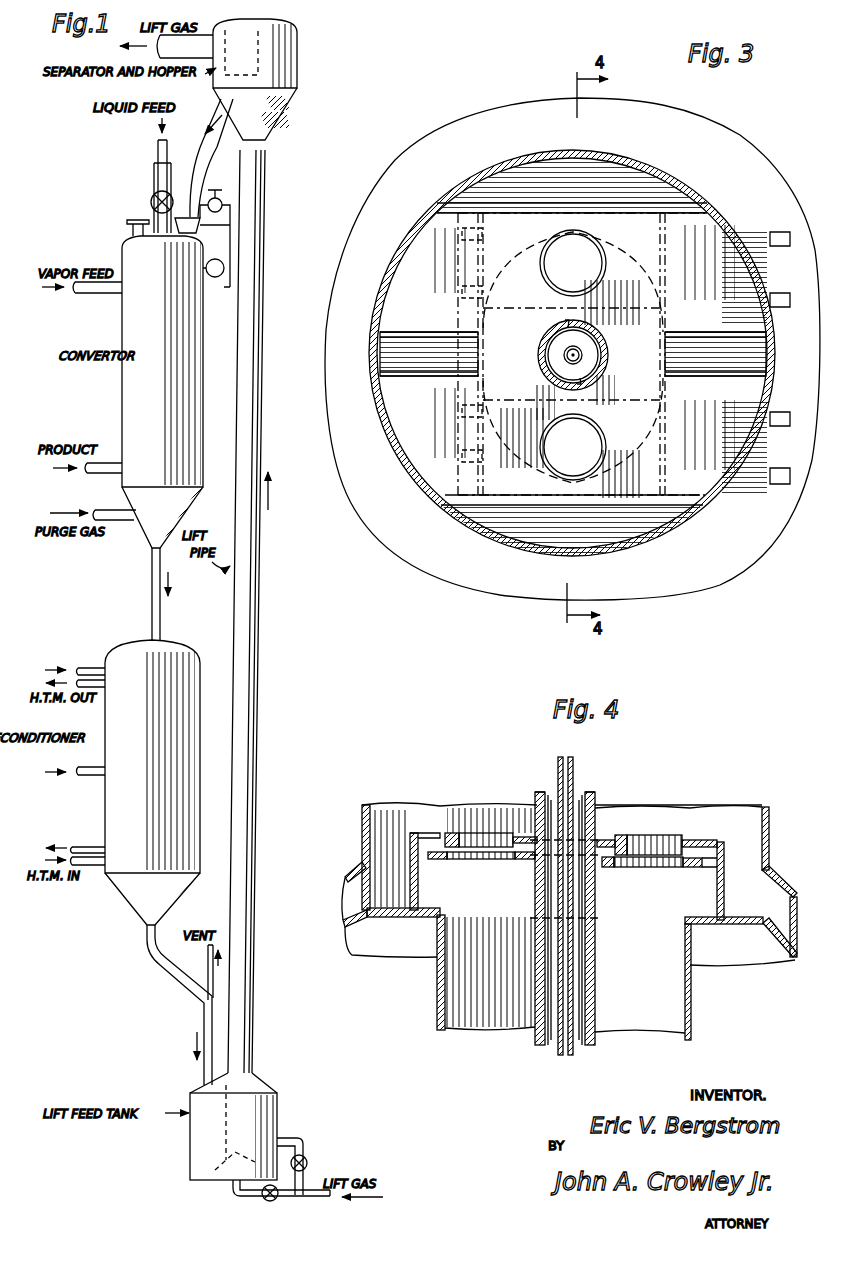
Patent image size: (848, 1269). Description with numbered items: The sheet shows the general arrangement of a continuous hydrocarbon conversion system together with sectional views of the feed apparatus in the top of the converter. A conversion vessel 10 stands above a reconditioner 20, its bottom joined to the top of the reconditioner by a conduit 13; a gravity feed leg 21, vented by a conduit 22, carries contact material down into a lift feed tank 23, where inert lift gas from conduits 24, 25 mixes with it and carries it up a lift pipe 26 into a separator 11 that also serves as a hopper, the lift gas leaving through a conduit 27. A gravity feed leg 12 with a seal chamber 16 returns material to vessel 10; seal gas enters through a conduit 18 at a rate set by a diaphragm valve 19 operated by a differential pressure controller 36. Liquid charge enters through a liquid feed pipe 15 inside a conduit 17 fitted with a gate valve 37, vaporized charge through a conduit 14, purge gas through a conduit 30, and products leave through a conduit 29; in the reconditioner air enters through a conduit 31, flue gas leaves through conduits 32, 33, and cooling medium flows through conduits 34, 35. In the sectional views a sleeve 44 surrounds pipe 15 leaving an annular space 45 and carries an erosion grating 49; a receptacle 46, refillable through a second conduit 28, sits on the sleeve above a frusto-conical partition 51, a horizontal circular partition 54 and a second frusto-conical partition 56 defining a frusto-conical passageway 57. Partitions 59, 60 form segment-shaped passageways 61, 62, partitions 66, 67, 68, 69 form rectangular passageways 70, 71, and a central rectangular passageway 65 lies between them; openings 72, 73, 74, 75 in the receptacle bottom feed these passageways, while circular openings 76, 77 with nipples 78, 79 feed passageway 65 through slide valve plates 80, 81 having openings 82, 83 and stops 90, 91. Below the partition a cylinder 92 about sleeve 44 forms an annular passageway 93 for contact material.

In FIG. 1, the conversion vessel 10 is at (120, 376).
In FIG. 1, the separator 11 is at (297, 68).
In FIG. 1, the gravity feed leg 12 is at (226, 148).
In FIG. 1, the conduit 13 is at (150, 603).
In FIG. 1, the conduit 14 is at (85, 296).
In FIG. 1, the liquid feed pipe 15 is at (157, 150).
In FIG. 3, the liquid feed pipe 15 is at (580, 357).
In FIG. 4, the liquid feed pipe 15 is at (572, 758).
In FIG. 1, the seal chamber 16 is at (185, 180).
In FIG. 1, the conduit 17 is at (154, 176).
In FIG. 1, the conduit 18 is at (197, 206).
In FIG. 1, the diaphragm valve 19 is at (226, 198).
In FIG. 1, the reconditioner 20 is at (103, 800).
In FIG. 1, the gravity feed leg 21 is at (200, 1024).
In FIG. 1, the conduit 22 is at (207, 957).
In FIG. 1, the lift feed tank 23 is at (189, 1142).
In FIG. 1, the conduit 24 is at (304, 1150).
In FIG. 1, the conduit 25 is at (232, 1190).
In FIG. 1, the lift pipe 26 is at (233, 630).
In FIG. 1, the conduit 27 is at (160, 48).
In FIG. 1, the second conduit 28 is at (128, 229).
In FIG. 1, the conduit 29 is at (90, 476).
In FIG. 1, the conduit 30 is at (110, 510).
In FIG. 1, the conduit 31 is at (88, 768).
In FIG. 1, the conduit 32 is at (90, 666).
In FIG. 1, the conduit 33 is at (95, 846).
In FIG. 1, the conduit 34 is at (100, 868).
In FIG. 1, the conduit 35 is at (100, 690).
In FIG. 1, the differential pressure controller 36 is at (220, 280).
In FIG. 1, the gate valve 37 is at (151, 203).
In FIG. 3, the sleeve 44 is at (546, 342).
In FIG. 4, the sleeve 44 is at (598, 800).
In FIG. 3, the annular space 45 is at (547, 358).
In FIG. 4, the annular space 45 is at (578, 795).
In FIG. 3, the receptacle 46 is at (648, 538).
In FIG. 4, the receptacle 46 is at (769, 812).
In FIG. 3, the erosion grating 49 is at (602, 337).
In FIG. 4, the frusto-conical partition 51 is at (360, 922).
In FIG. 4, the horizontal circular partition 54 is at (697, 924).
In FIG. 4, the second frusto-conical partition 56 is at (358, 860).
In FIG. 4, the frusto-conical passageway 57 is at (345, 908).
In FIG. 3, the partition 59 is at (553, 202).
In FIG. 4, the partition 59 is at (409, 890).
In FIG. 3, the partition 60 is at (458, 508).
In FIG. 4, the partition 60 is at (724, 900).
In FIG. 3, the passageway 61 is at (636, 168).
In FIG. 4, the passageway 61 is at (382, 838).
In FIG. 3, the passageway 62 is at (560, 548).
In FIG. 4, the passageway 62 is at (745, 845).
In FIG. 4, the central rectangular passageway 65 is at (432, 917).
In FIG. 3, the partition 66 is at (425, 330).
In FIG. 3, the partition 67 is at (400, 378).
In FIG. 3, the partition 68 is at (705, 330).
In FIG. 3, the partition 69 is at (706, 378).
In FIG. 3, the rectangular passageway 70 is at (380, 338).
In FIG. 3, the rectangular passageway 71 is at (750, 344).
In FIG. 3, the opening 72 is at (598, 165).
In FIG. 4, the opening 72 is at (379, 808).
In FIG. 3, the opening 73 is at (505, 530).
In FIG. 4, the opening 73 is at (748, 806).
In FIG. 3, the opening 74 is at (392, 360).
In FIG. 3, the opening 75 is at (758, 368).
In FIG. 3, the circular opening 76 is at (590, 250).
In FIG. 4, the circular opening 76 is at (490, 830).
In FIG. 3, the circular opening 77 is at (588, 466).
In FIG. 4, the circular opening 77 is at (650, 834).
In FIG. 3, the nipple 78 is at (606, 278).
In FIG. 4, the nipple 78 is at (452, 830).
In FIG. 3, the nipple 79 is at (602, 440).
In FIG. 4, the nipple 79 is at (687, 838).
In FIG. 3, the slide valve plate 80 is at (790, 262).
In FIG. 4, the slide valve plate 80 is at (440, 860).
In FIG. 3, the slide valve plate 81 is at (745, 485).
In FIG. 4, the slide valve plate 81 is at (692, 869).
In FIG. 4, the circular opening 82 is at (490, 860).
In FIG. 4, the circular opening 83 is at (634, 868).
In FIG. 3, the stop 90 is at (462, 292).
In FIG. 3, the stop 91 is at (462, 456).
In FIG. 4, the cylinder 92 is at (692, 1000).
In FIG. 4, the annular passageway 93 is at (668, 1032).